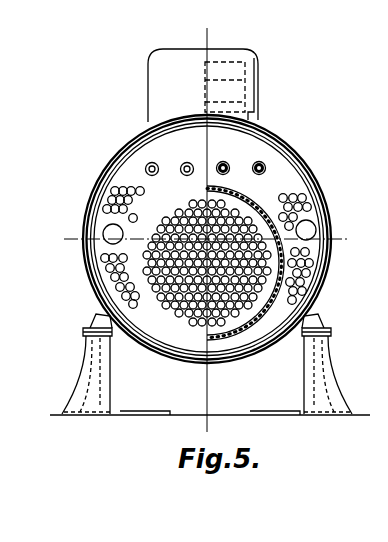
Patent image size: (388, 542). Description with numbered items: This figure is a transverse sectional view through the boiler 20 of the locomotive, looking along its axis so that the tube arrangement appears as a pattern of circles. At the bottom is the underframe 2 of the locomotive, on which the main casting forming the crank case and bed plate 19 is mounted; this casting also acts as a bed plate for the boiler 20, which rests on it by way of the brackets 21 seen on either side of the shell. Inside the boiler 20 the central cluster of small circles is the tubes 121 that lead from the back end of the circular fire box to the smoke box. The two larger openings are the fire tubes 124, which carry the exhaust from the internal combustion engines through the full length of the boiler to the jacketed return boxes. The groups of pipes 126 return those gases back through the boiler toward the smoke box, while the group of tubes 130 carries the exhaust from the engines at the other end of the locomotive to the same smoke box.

The underframe 2 is at (178, 416).
The bed plate 19 is at (222, 414).
The boiler 20 is at (322, 243).
The bracket 21 is at (105, 370).
The tubes 121 is at (175, 223).
The fire tubes 124 is at (123, 235).
The groups of pipes 126 is at (145, 192).
The group of tubes 130 is at (110, 268).